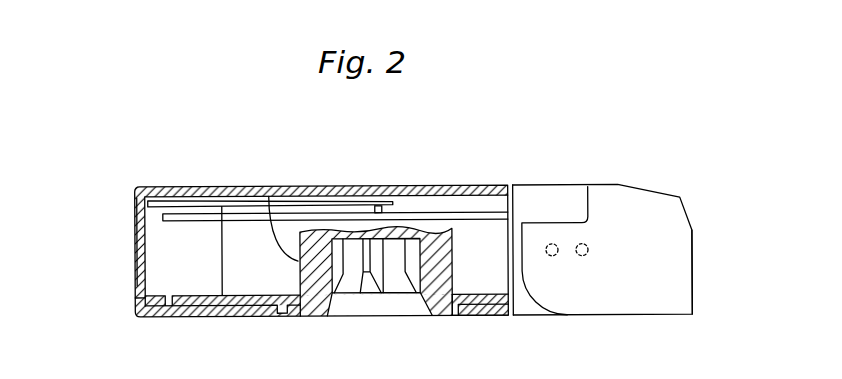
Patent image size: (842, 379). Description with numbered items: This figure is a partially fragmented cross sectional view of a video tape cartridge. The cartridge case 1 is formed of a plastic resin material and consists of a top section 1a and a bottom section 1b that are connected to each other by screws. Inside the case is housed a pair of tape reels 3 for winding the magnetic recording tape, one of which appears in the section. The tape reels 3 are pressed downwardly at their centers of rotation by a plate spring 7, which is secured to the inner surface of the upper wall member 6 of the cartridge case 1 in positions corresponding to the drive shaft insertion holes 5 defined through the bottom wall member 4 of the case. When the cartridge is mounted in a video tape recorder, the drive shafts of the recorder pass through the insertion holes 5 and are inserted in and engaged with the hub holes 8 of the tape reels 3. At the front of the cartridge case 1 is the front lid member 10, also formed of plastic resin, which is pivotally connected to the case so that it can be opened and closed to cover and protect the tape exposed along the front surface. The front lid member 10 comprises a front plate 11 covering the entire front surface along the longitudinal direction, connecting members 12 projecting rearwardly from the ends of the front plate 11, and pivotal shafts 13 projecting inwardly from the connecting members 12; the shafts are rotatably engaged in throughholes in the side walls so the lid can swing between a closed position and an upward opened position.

The cartridge case 1 is at (207, 182).
The top section 1a is at (143, 231).
The bottom section 1b is at (135, 296).
The tape reels 3 is at (269, 196).
The bottom wall member 4 is at (232, 317).
The drive shaft insertion holes 5 is at (463, 311).
The upper wall member 6 is at (397, 186).
The plate spring 7 is at (333, 200).
The hub holes 8 is at (328, 275).
The front lid member 10 is at (661, 187).
The front plate 11 is at (598, 304).
The connecting members 12 is at (683, 246).
The pivotal shafts 13 is at (590, 252).